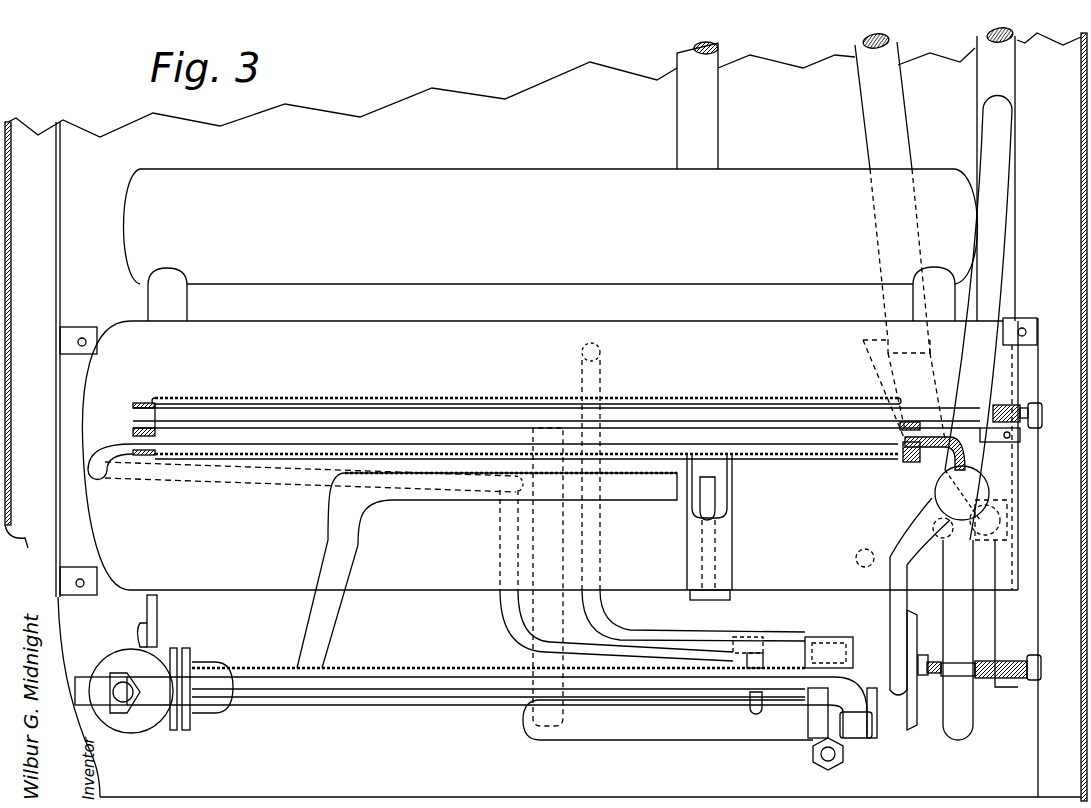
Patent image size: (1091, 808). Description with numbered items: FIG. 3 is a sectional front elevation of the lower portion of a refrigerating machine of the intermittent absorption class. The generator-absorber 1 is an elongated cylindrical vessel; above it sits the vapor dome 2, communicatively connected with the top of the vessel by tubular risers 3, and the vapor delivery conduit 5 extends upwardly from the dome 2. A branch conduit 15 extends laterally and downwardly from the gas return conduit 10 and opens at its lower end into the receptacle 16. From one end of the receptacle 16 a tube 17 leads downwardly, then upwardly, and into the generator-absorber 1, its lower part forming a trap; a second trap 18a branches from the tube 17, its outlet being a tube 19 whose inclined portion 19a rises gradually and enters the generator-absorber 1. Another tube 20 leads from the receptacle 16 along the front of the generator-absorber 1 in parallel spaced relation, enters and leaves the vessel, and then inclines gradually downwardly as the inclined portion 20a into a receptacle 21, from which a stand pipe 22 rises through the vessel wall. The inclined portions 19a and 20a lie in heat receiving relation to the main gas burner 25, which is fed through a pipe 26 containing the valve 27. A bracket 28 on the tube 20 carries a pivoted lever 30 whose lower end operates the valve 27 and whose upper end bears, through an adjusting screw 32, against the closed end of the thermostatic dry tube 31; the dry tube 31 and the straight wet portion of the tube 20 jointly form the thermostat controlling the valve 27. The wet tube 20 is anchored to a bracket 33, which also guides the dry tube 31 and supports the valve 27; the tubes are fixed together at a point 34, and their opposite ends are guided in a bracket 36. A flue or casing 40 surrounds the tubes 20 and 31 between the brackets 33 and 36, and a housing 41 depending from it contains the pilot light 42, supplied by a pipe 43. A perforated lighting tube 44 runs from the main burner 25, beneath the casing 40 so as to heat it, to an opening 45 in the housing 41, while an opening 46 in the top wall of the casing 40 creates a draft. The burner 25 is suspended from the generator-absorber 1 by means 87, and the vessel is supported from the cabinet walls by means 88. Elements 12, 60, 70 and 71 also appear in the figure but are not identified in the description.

The generator-absorber 1 is at (782, 321).
The vapor dome 2 is at (551, 226).
The tubular risers 3 is at (170, 282).
The vapor delivery conduit 5 is at (712, 129).
The gas return conduit 10 is at (985, 87).
The pipe 12 is at (876, 132).
The branch conduit 15 is at (1000, 197).
The receptacle 16 is at (935, 493).
The tube 17 is at (962, 600).
The trap 18a is at (973, 710).
The tube 19 is at (602, 352).
The inclined portion of tube 19a is at (778, 630).
The tube 20 is at (793, 444).
The inclined portion of tube 20a is at (252, 488).
The receptacle 21 is at (655, 724).
The stand pipe 22 is at (533, 530).
The gas burner 25 is at (420, 666).
The pipe 26 is at (452, 685).
The valve 27 is at (830, 637).
The bracket 28 is at (1003, 442).
The lever 30 is at (1015, 535).
The thermostatic tube 31 is at (742, 412).
The screw 32 is at (1036, 410).
The bracket 33 is at (903, 458).
The connection point 34 is at (197, 428).
The bracket 36 is at (133, 434).
The flue or casing 40 is at (460, 398).
The housing 41 is at (732, 531).
The pilot light 42 is at (705, 505).
The pipe 43 is at (748, 704).
The perforated lighting tube 44 is at (345, 552).
The opening 45 is at (677, 490).
The opening 46 is at (190, 397).
The bolt 60 is at (1041, 665).
The collar 70 is at (925, 655).
The nut 71 is at (940, 662).
The burner suspending means 87 is at (158, 615).
The supporting means 88 is at (70, 398).